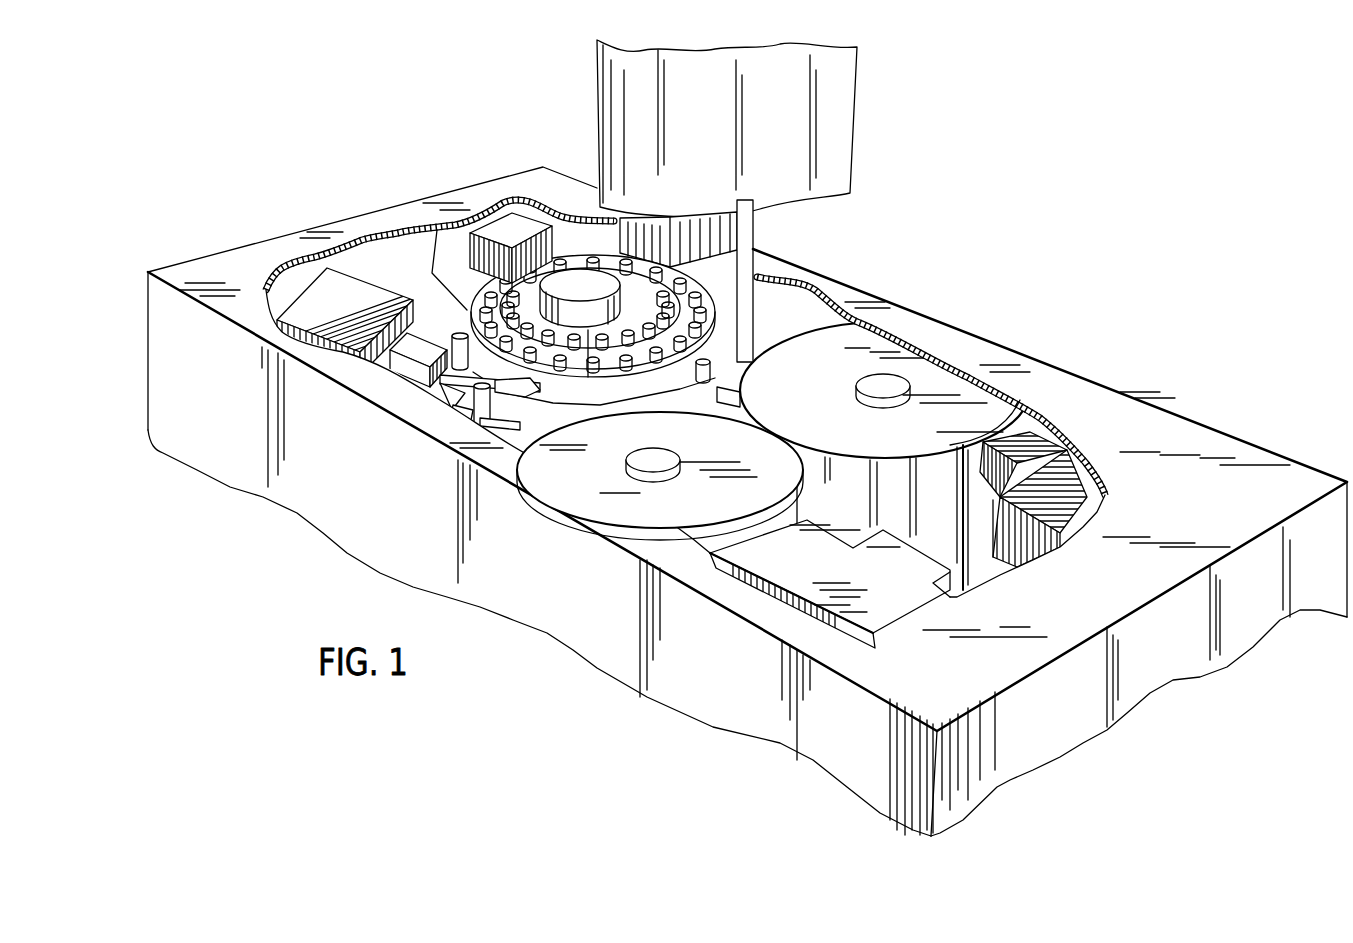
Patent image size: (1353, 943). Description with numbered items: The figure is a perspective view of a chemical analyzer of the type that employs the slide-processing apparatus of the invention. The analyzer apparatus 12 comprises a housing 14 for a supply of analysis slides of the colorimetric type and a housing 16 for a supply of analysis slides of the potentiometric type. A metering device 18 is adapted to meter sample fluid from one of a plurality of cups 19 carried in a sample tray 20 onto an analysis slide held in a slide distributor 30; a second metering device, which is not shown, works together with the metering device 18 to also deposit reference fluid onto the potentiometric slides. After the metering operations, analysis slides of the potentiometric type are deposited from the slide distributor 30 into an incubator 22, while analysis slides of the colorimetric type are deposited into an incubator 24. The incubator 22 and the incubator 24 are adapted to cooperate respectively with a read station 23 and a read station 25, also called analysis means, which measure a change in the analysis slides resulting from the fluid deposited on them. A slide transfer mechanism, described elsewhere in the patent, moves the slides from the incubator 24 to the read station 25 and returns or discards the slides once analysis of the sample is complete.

The analyzer apparatus 12 is at (943, 312).
The housing 14 is at (336, 306).
The housing 16 is at (512, 230).
The metering device 18 is at (692, 240).
The cups 19 is at (590, 254).
The sample tray 20 is at (630, 265).
The incubator 22 is at (848, 428).
The read station 23 is at (1071, 493).
The incubator 24 is at (750, 503).
The read station 25 is at (912, 590).
The slide distributor 30 is at (453, 316).